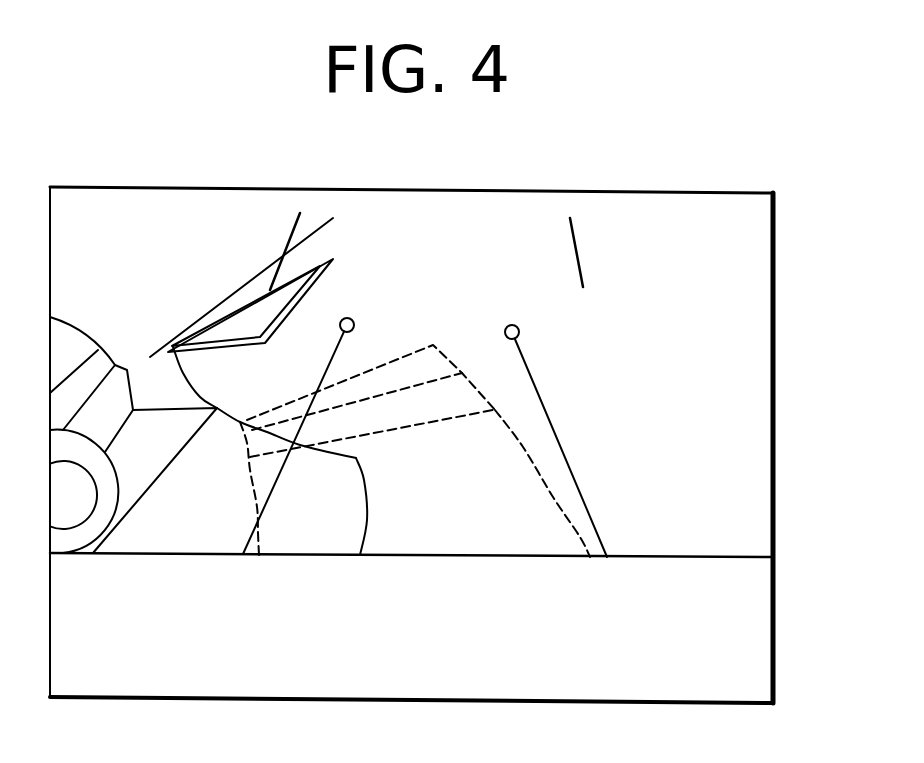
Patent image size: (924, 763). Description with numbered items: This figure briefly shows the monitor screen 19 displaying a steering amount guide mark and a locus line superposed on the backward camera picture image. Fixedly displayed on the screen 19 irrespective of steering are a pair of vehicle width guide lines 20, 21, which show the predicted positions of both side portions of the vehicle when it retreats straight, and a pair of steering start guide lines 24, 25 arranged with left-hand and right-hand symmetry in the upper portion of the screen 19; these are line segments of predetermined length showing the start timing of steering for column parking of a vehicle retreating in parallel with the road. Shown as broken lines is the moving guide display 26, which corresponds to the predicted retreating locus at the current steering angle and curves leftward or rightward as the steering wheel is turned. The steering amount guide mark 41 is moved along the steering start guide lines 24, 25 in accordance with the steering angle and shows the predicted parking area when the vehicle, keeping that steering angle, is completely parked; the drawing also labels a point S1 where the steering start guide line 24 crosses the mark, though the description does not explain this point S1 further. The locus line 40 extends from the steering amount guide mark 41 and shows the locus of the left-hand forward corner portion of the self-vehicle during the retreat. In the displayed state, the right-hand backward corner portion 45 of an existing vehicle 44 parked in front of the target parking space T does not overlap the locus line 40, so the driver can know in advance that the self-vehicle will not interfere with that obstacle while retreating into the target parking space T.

The screen 19 is at (775, 318).
The vehicle width guide line 20 is at (352, 335).
The vehicle width guide line 21 is at (523, 363).
The steering start guide line 24 is at (293, 227).
The steering start guide line 25 is at (578, 246).
The moving guide display 26 is at (397, 352).
The locus line 40 is at (197, 382).
The steering amount guide mark 41 is at (206, 325).
The existing vehicle 44 is at (85, 330).
The right-hand backward corner portion 45 is at (130, 372).
The intersection point S1 is at (278, 262).
The target parking space T is at (312, 252).